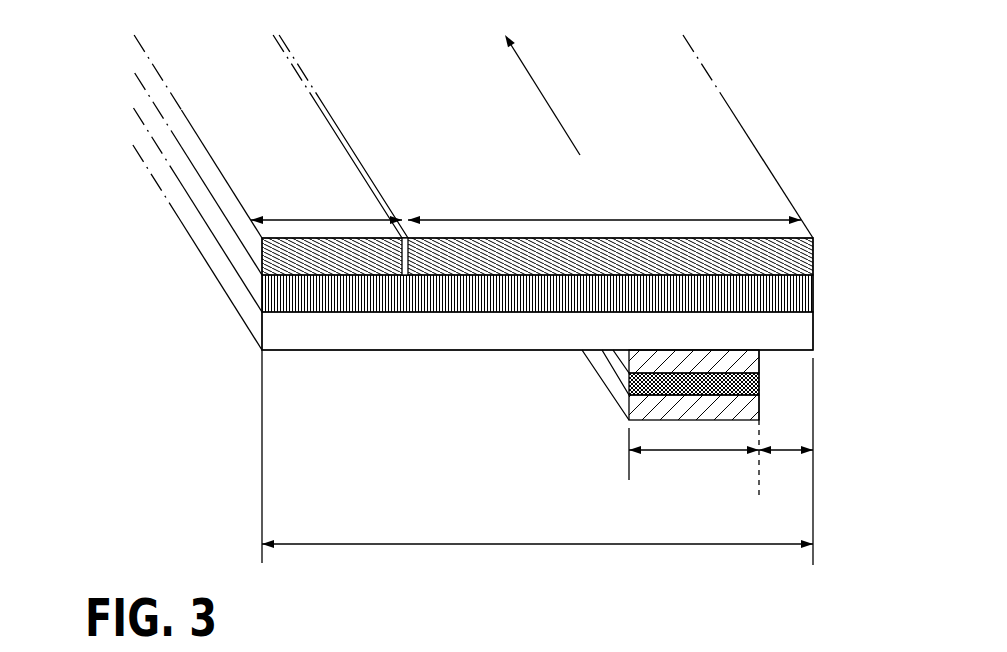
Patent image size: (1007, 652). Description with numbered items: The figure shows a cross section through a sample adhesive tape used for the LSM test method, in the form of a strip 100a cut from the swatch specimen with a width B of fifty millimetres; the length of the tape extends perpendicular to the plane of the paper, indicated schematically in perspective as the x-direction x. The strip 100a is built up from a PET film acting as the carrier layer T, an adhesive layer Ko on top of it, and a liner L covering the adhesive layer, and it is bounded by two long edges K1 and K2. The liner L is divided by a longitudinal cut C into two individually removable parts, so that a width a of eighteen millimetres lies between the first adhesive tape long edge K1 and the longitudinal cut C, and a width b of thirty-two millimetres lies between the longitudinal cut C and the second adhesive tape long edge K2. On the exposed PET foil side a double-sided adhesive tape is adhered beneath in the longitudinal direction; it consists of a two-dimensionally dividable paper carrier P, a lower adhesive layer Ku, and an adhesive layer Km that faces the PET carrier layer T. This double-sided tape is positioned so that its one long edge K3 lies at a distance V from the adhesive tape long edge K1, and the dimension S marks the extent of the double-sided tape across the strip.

The strip 100a is at (82, 73).
The longitudinal cut C is at (403, 230).
The x-direction x is at (542, 95).
The width a is at (326, 209).
The width b is at (604, 208).
The first adhesive tape long edge K1 is at (816, 236).
The liner L is at (806, 261).
The adhesive layer Ko is at (797, 295).
The carrier layer T is at (797, 327).
The second adhesive tape long edge K2 is at (261, 352).
The adhesive layer Km is at (747, 364).
The paper carrier P is at (760, 383).
The lower adhesive layer Ku is at (742, 409).
The width of lower block S is at (694, 463).
The distance V is at (786, 463).
The long edge of the double-sided adhesive tape K3 is at (757, 438).
The width B is at (537, 556).